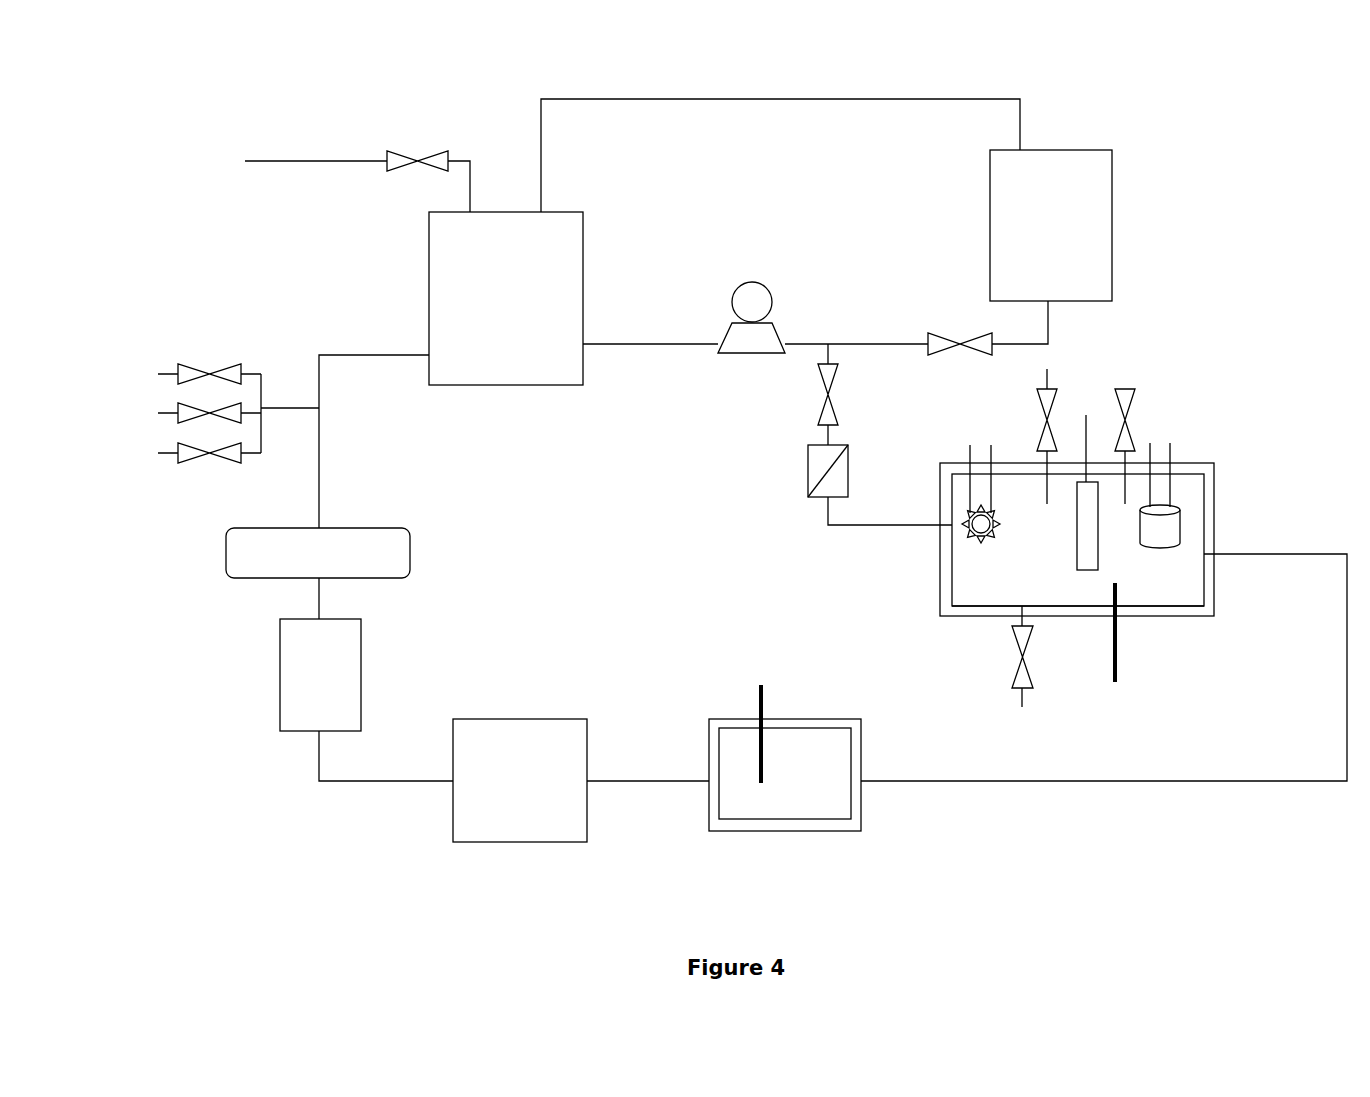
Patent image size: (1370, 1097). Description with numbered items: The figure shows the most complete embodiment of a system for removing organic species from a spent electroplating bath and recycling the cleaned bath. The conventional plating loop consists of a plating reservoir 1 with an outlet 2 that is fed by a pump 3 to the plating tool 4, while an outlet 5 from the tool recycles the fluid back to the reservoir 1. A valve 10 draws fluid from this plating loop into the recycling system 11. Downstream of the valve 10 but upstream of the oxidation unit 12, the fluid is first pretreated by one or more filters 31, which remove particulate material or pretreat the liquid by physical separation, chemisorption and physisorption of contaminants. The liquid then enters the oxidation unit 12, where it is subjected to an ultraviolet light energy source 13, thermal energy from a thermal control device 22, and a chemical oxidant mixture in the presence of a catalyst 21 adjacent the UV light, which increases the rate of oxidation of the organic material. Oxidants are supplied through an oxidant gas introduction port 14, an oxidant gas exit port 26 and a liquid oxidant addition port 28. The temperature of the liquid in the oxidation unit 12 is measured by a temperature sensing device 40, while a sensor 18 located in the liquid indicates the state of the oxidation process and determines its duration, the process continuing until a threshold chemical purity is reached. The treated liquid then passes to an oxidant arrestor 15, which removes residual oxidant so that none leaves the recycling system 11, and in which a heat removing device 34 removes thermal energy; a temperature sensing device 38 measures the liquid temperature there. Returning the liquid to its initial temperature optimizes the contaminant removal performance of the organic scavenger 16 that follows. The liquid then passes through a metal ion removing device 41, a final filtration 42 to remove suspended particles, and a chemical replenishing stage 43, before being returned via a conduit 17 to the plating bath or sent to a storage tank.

The plating reservoir 1 is at (542, 283).
The outlet 2 is at (595, 334).
The pump 3 is at (756, 303).
The plating tool 4 is at (1072, 271).
The outlet 5 is at (1040, 119).
The valve 10 is at (808, 403).
The recycling system 11 is at (1100, 525).
The oxidation unit 12 is at (940, 563).
The ultraviolet light energy source 13 is at (972, 510).
The oxidant gas introduction port 14 is at (1027, 622).
The oxidant arrestor 15 is at (798, 759).
The organic scavenger 16 is at (555, 758).
The conduit 17 is at (349, 355).
The sensor 18 is at (1180, 440).
The catalyst 21 is at (1110, 559).
The thermal control device 22 is at (1136, 615).
The oxidant gas exit port 26 is at (1125, 389).
The liquid oxidant addition port 28 is at (1042, 418).
The prefilter device 31 is at (808, 468).
The heat removing device 34 is at (852, 830).
The temperature sensing device 38 is at (752, 685).
The temperature sensing device 40 is at (1117, 652).
The metal ion removing device 41 is at (372, 656).
The final filtration 42 is at (415, 522).
The chemical replenishing stage 43 is at (222, 362).